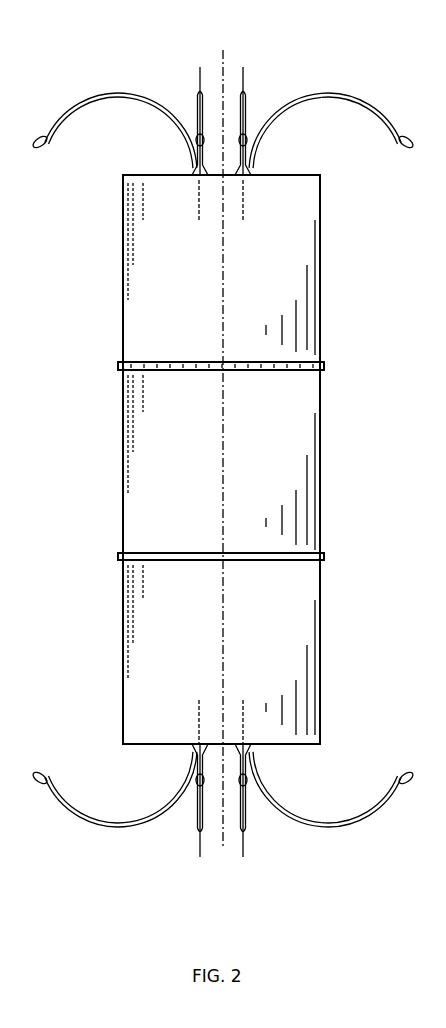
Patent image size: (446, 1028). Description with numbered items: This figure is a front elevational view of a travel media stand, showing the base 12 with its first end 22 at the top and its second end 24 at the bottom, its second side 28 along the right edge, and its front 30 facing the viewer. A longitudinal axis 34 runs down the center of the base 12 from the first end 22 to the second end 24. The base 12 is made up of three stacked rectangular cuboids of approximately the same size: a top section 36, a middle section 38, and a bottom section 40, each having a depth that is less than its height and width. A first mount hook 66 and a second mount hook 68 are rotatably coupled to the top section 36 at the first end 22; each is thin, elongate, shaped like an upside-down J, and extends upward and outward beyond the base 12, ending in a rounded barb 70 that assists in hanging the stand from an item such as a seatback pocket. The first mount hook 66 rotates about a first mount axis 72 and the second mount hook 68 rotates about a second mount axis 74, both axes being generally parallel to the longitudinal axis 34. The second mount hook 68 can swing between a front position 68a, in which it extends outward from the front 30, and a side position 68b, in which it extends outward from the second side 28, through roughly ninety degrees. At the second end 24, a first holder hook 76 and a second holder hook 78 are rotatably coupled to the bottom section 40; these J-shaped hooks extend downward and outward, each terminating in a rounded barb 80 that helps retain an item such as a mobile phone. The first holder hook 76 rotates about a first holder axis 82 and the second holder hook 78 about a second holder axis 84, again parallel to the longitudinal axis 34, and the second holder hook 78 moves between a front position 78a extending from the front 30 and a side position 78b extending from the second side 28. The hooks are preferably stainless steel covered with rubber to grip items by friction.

The base 12 is at (120, 270).
The first end 22 is at (283, 174).
The second end 24 is at (290, 748).
The second side 28 is at (318, 228).
The front 30 is at (272, 274).
The longitudinal axis 34 is at (223, 58).
The top section 36 is at (300, 302).
The middle section 38 is at (297, 473).
The bottom section 40 is at (293, 636).
The first mount hook 66 is at (113, 138).
The second mount hook 68 is at (335, 89).
The front position 68a is at (246, 110).
The side position 68b is at (383, 110).
The rounded barb 70 is at (33, 150).
The first mount axis 72 is at (197, 77).
The second mount axis 74 is at (244, 76).
The first holder hook 76 is at (115, 820).
The second holder hook 78 is at (334, 820).
The front position 78a is at (248, 826).
The side position 78b is at (335, 827).
The rounded barb 80 is at (28, 782).
The first holder axis 82 is at (198, 710).
The second holder axis 84 is at (244, 705).